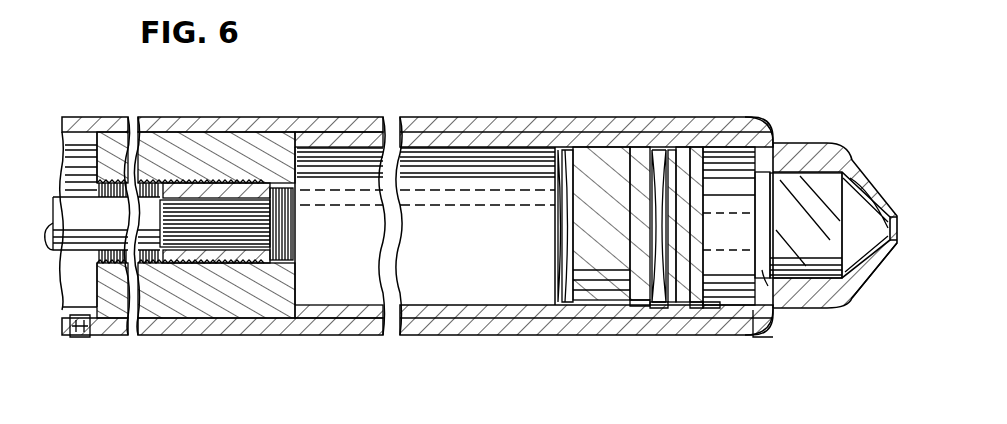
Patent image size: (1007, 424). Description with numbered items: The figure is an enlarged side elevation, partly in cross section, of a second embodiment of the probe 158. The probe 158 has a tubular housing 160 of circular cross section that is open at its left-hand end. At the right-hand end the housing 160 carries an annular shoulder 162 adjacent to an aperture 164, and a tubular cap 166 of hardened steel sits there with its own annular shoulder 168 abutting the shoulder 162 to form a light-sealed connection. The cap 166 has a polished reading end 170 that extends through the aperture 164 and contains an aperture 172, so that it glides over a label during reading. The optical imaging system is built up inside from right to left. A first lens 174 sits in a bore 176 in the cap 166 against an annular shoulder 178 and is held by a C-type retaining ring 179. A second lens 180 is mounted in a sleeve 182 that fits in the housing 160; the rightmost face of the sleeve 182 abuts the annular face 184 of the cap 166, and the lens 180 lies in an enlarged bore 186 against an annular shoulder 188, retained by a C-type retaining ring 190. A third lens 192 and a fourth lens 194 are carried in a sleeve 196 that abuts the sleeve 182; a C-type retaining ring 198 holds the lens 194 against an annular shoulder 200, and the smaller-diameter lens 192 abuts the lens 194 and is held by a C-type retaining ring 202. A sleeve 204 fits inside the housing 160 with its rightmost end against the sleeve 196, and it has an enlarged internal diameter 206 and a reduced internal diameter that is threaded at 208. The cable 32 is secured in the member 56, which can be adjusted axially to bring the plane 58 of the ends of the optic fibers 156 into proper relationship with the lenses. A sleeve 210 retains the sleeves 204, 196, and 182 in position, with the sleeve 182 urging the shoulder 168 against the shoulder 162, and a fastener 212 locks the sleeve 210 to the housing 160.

The cable 32 is at (55, 210).
The member 56 is at (224, 186).
The plane of the ends of the optic fibers 58 is at (290, 242).
The optic fibers 156 is at (214, 234).
The probe 158 is at (436, 98).
The tubular housing 160 is at (276, 122).
The annular shoulder 162 is at (758, 158).
The aperture 164 is at (758, 141).
The tubular cap 166 is at (805, 147).
The annular shoulder 168 is at (770, 321).
The reading end 170 is at (873, 267).
The aperture 172 is at (893, 213).
The first lens 174 is at (790, 178).
The bore 176 is at (777, 172).
The annular shoulder 178 is at (845, 183).
The C-type retaining ring 179 is at (765, 272).
The second lens 180 is at (692, 148).
The sleeve 182 is at (698, 148).
The annular face 184 is at (712, 308).
The enlarged bore 186 is at (683, 148).
The annular shoulder 188 is at (704, 310).
The C-type retaining ring 190 is at (680, 308).
The third lens 192 is at (634, 153).
The fourth lens 194 is at (608, 147).
The sleeve 196 is at (587, 132).
The C-type retaining ring 198 is at (557, 295).
The annular shoulder 200 is at (650, 304).
The C-type retaining ring 202 is at (653, 306).
The sleeve 204 is at (204, 185).
The enlarged internal diameter 206 is at (495, 148).
The threaded reduced internal diameter 208 is at (152, 183).
The sleeve 210 is at (78, 131).
The fastener 212 is at (80, 336).